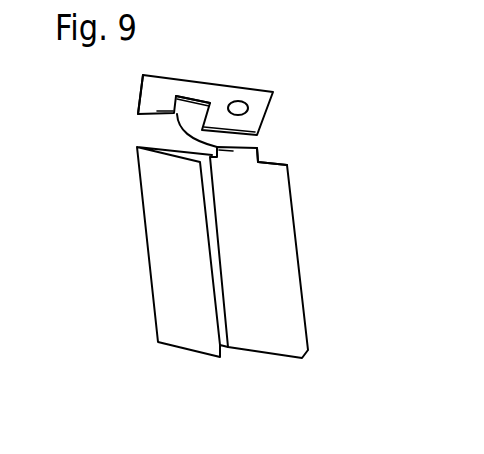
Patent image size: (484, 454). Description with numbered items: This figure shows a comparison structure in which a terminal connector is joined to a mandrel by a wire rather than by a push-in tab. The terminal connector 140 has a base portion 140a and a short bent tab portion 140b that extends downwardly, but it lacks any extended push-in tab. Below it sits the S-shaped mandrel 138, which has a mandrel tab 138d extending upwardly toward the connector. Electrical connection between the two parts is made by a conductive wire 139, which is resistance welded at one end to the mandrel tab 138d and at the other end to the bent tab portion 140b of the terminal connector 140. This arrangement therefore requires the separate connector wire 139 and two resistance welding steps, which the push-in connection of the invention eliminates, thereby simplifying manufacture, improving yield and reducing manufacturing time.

The S-shaped mandrel 138 is at (287, 268).
The mandrel tab 138d is at (258, 153).
The conductive wire 139 is at (185, 124).
The terminal connector 140 is at (238, 87).
The base portion 140a is at (190, 83).
The bent tab portion 140b is at (136, 106).